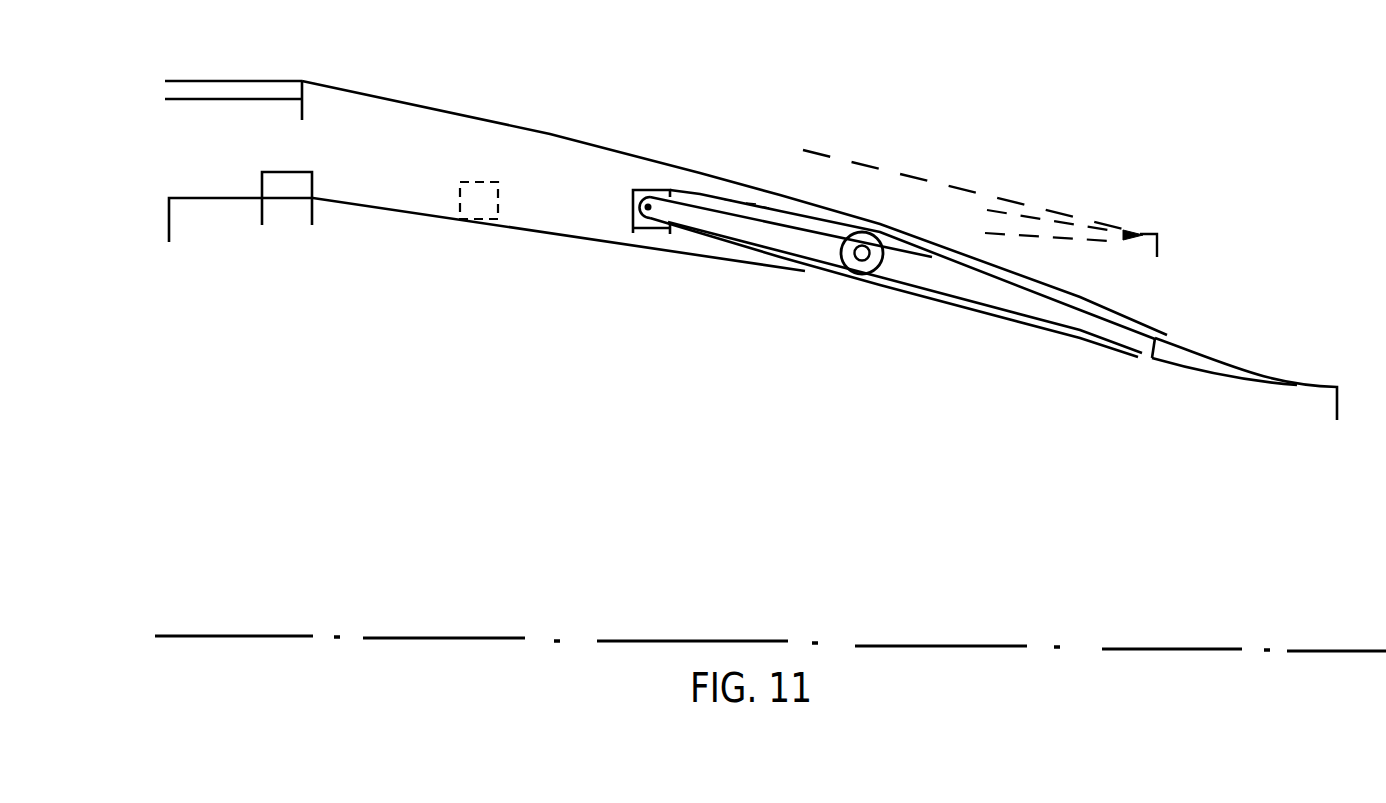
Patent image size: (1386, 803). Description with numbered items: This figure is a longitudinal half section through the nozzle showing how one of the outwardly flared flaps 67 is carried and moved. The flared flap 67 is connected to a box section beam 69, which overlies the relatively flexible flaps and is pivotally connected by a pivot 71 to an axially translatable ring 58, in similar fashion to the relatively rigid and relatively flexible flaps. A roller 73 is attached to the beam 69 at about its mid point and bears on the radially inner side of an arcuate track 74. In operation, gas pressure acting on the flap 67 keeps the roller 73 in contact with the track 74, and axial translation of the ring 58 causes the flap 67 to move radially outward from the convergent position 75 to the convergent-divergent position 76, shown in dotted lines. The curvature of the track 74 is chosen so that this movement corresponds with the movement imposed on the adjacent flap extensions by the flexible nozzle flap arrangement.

The axially translatable ring 58 is at (647, 235).
The outwardly flared flap 67 is at (1200, 360).
The box section beam 69 is at (990, 298).
The pivot 71 is at (653, 214).
The roller 73 is at (860, 275).
The arcuate track 74 is at (772, 212).
The convergent position 75 is at (1250, 368).
The convergent-divergent position 76 is at (1007, 193).